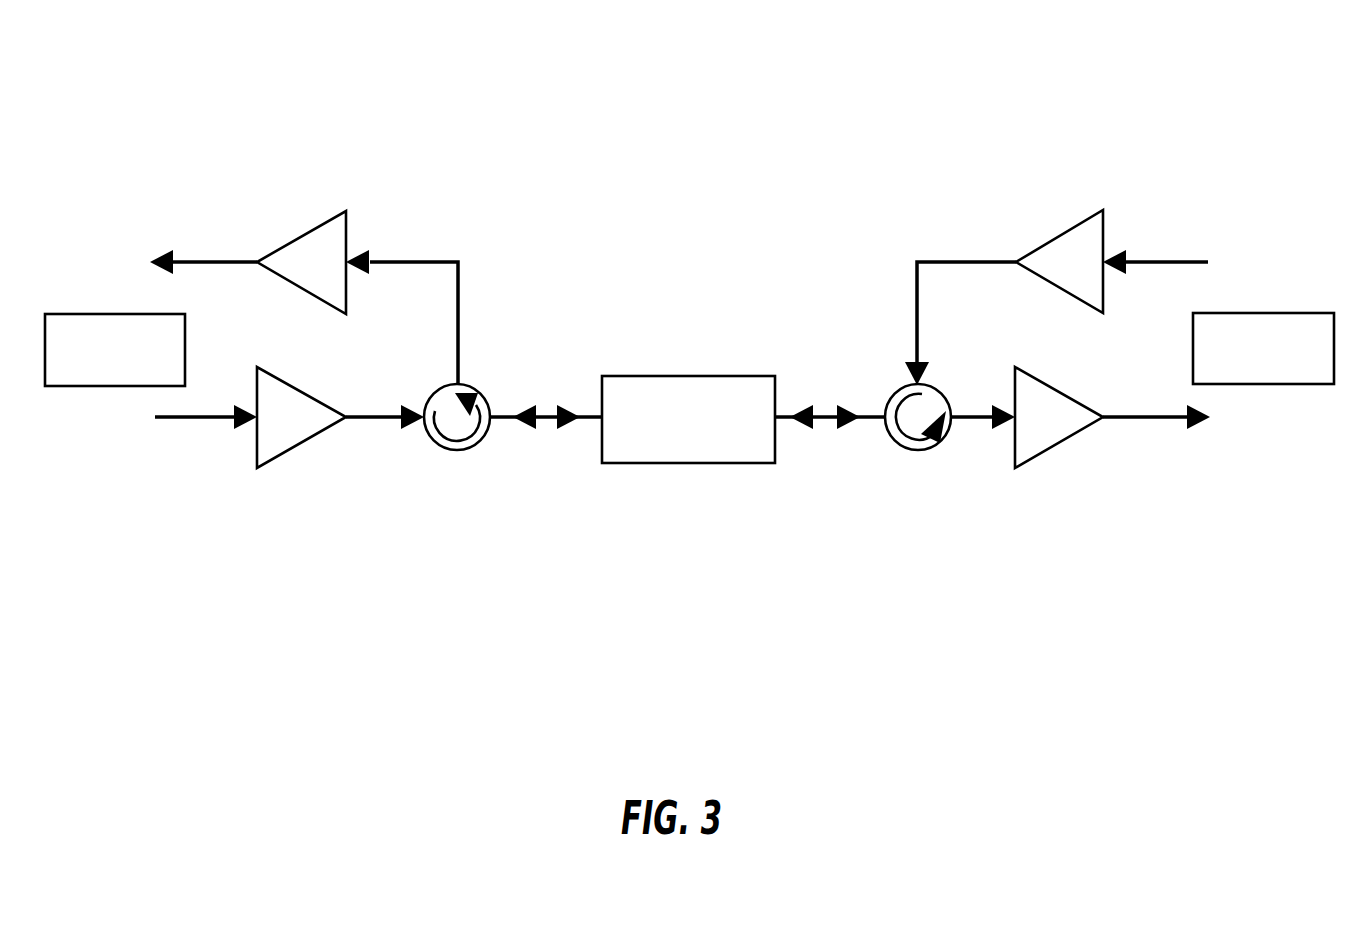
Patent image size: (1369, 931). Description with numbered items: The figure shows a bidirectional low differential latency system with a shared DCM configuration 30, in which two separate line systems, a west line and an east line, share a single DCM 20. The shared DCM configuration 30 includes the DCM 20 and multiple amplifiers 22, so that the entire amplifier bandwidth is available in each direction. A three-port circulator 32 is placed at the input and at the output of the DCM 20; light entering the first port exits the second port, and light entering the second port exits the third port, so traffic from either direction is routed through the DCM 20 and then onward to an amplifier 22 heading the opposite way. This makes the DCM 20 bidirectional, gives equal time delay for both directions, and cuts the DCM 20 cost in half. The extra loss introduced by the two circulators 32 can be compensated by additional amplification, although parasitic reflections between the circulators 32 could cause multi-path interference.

The shared DCM configuration 30 is at (598, 104).
The DCM 20 is at (685, 376).
The amplifiers 22 is at (308, 232).
The 3-port circulator 32 is at (463, 450).